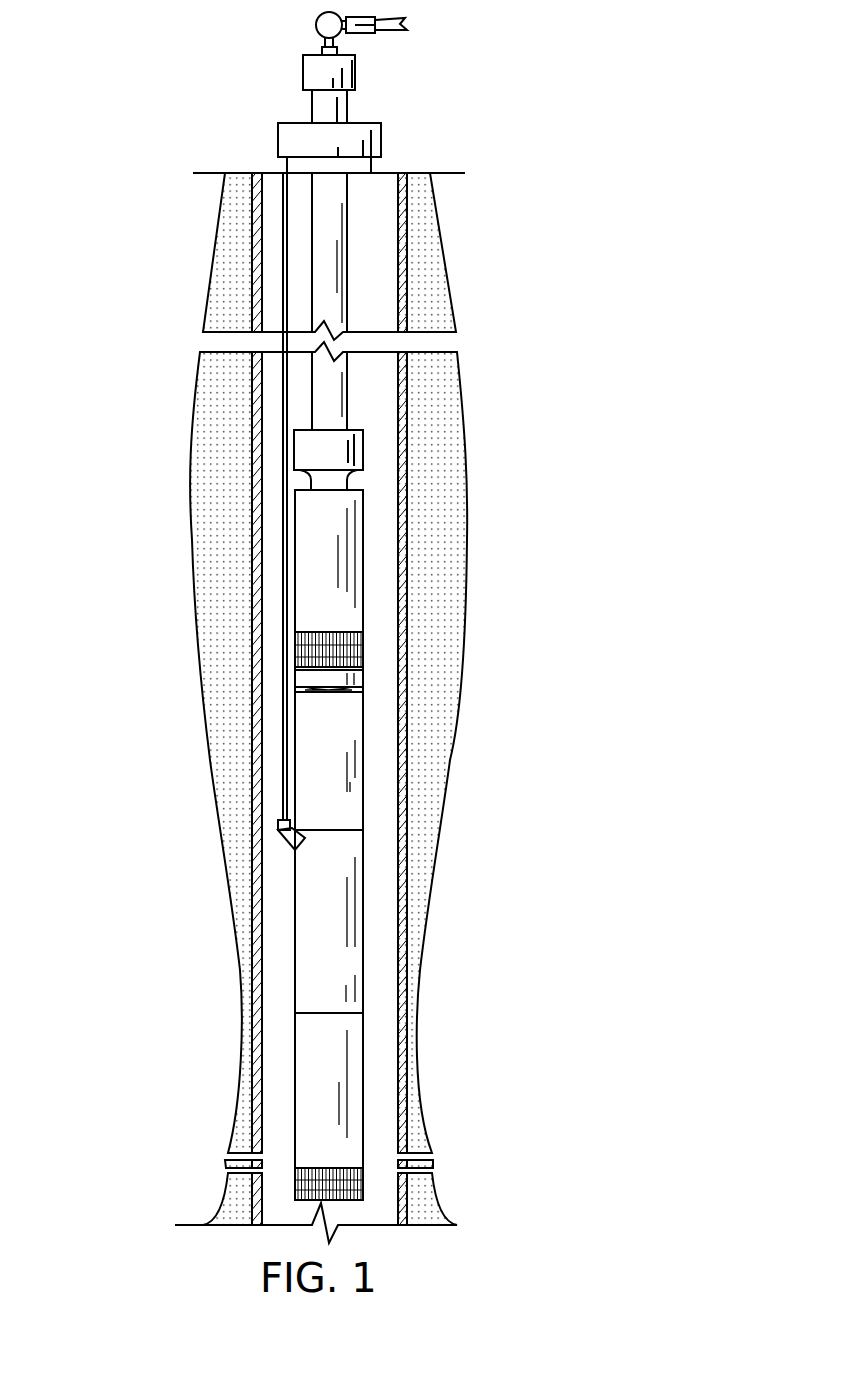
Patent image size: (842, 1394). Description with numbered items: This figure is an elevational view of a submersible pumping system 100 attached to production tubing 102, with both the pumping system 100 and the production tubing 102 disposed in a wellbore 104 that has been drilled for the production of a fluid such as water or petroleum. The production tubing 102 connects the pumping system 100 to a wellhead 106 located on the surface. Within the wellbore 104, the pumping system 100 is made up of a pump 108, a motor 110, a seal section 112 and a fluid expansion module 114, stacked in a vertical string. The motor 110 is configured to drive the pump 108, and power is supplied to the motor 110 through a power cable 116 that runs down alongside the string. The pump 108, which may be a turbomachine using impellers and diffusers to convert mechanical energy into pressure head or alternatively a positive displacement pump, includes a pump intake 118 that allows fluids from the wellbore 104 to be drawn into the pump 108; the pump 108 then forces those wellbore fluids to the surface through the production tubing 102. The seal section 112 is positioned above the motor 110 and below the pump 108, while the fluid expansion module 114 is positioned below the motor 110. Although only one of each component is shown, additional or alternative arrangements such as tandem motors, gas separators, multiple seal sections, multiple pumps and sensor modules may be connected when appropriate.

The pumping system 100 is at (375, 843).
The production tubing 102 is at (347, 217).
The wellbore 104 is at (407, 285).
The wellhead 106 is at (305, 73).
The pump 108 is at (365, 613).
The motor 110 is at (365, 985).
The seal section 112 is at (365, 725).
The fluid expansion module 114 is at (365, 1133).
The power cable 116 is at (282, 733).
The pump intake 118 is at (297, 643).